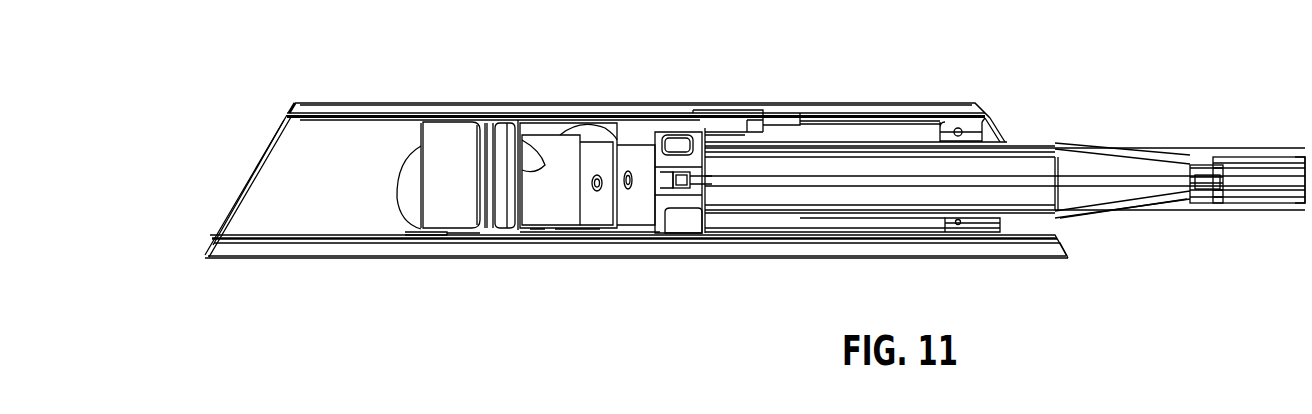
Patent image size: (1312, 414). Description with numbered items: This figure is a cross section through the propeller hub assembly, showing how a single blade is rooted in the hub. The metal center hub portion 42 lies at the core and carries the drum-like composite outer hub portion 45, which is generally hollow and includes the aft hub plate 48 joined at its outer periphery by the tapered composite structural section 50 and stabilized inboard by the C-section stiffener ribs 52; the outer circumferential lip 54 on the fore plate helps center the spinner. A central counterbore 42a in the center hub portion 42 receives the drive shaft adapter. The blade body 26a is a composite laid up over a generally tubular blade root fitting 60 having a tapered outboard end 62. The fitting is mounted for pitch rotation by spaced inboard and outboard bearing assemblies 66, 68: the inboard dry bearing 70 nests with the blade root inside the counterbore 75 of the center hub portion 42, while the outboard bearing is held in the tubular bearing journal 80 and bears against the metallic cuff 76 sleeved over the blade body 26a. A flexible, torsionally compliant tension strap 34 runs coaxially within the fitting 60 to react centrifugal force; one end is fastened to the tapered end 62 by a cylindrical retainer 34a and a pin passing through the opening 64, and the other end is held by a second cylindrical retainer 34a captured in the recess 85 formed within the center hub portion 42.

The blade body 26a is at (1295, 215).
The tension strap 34 is at (1068, 185).
The cylindrical retainer 34a is at (675, 215).
The center hub portion 42 is at (632, 212).
The central counterbore 42a is at (686, 221).
The outer hub portion 45 is at (517, 88).
The aft hub plate 48 is at (360, 237).
The tapered composite structural section 50 is at (273, 182).
The stiffener ribs 52 is at (497, 187).
The outer circumferential lip 54 is at (558, 101).
The blade root fitting 60 is at (1033, 158).
The tapered outboard end 62 is at (1308, 130).
The opening 64 is at (1203, 206).
The inboard pitch rotation bearing assembly 66 is at (709, 78).
The outboard pitch rotation bearing assembly 68 is at (972, 78).
The inboard dry bearing 70 is at (720, 140).
The counterbore 75 is at (742, 120).
The metallic cuff 76 is at (985, 115).
The bearing journal 80 is at (1023, 223).
The recess 85 is at (660, 163).